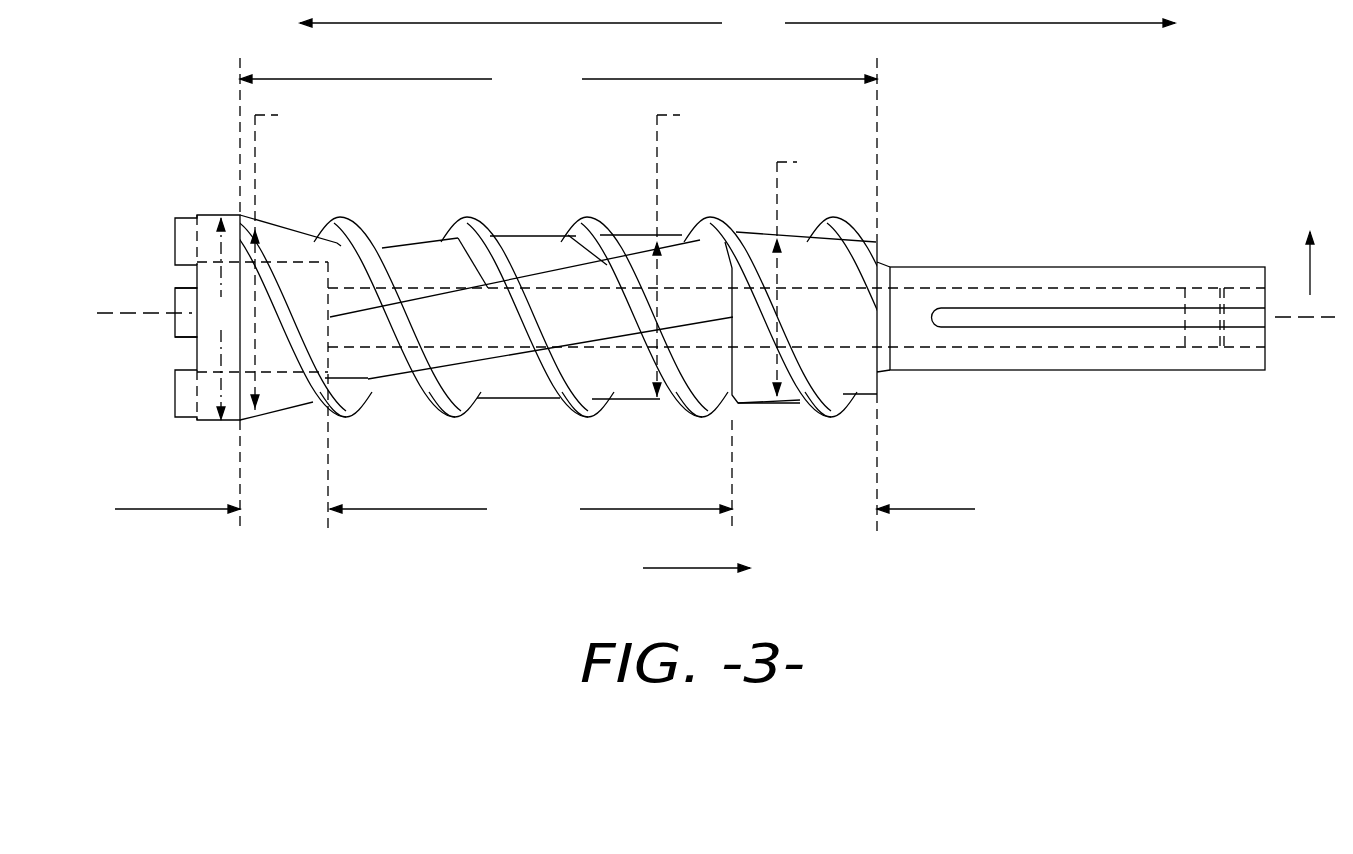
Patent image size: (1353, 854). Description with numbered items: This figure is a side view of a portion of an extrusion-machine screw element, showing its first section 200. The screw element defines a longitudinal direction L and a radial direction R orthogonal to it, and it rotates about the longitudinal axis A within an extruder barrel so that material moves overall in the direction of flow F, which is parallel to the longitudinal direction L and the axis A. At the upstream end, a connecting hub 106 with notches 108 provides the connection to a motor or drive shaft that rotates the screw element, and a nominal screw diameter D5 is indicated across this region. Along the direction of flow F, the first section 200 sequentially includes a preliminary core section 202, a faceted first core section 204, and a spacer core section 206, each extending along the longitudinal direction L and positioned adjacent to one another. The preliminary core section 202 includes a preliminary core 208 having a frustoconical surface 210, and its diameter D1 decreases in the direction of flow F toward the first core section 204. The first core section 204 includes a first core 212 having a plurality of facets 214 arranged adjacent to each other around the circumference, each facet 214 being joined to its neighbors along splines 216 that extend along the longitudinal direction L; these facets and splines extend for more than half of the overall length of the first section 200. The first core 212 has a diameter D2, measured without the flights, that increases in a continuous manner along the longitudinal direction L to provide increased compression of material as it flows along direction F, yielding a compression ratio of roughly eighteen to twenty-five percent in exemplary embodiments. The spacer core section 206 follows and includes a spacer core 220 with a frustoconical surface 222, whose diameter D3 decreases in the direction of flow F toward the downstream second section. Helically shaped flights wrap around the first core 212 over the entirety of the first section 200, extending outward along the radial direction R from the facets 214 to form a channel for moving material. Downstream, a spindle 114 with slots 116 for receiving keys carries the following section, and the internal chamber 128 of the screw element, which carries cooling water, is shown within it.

The connecting hub 106 is at (207, 215).
The notches 108 is at (176, 326).
The spindle 114 is at (1010, 275).
The slots 116 is at (1095, 318).
The internal chamber 128 is at (815, 280).
The first section 200 is at (558, 295).
The preliminary core section 202 is at (213, 511).
The faceted first core section 204 is at (531, 476).
The spacer core section 206 is at (880, 513).
The preliminary core 208 is at (278, 232).
The frustoconical surface 210 is at (288, 216).
The first core 212 is at (520, 247).
The facets 214 is at (640, 238).
The splines 216 is at (400, 238).
The spacer core 220 is at (847, 370).
The frustoconical surface 222 is at (758, 413).
The diameter of preliminary core D1 is at (283, 259).
The diameter of first core D2 is at (685, 253).
The diameter of spacer core D3 is at (804, 275).
The nominal screw diameter D5 is at (220, 319).
The longitudinal direction L is at (737, 25).
The direction of flow F is at (681, 571).
The radial direction R is at (1325, 263).
The longitudinal axis A is at (702, 314).